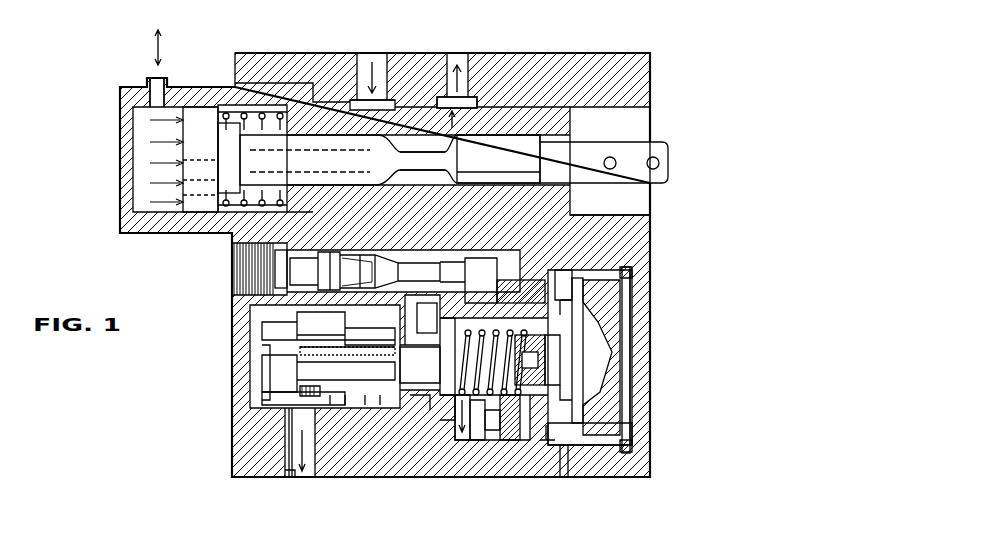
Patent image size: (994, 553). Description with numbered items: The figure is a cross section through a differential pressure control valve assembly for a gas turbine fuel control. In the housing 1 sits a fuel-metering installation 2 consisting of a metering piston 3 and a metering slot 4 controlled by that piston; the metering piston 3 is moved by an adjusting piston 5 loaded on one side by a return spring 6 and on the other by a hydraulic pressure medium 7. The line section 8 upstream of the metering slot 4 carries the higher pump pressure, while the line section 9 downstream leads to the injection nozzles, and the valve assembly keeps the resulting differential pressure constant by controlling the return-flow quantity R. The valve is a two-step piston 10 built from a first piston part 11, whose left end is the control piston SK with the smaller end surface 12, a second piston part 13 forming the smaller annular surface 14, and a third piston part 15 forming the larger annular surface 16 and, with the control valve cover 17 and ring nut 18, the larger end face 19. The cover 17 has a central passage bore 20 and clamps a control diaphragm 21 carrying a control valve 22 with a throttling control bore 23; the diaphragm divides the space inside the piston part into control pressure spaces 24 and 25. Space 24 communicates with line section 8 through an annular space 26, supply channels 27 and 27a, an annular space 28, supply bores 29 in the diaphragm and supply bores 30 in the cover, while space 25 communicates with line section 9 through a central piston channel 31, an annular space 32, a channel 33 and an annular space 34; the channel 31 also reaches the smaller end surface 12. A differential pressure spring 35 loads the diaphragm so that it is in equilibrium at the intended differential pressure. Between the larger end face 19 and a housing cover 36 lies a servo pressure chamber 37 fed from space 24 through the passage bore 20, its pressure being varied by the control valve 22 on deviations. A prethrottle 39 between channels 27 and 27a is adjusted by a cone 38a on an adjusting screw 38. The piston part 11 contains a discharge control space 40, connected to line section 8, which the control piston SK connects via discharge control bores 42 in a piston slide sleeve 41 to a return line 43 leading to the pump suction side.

The housing 1 is at (585, 62).
The fuel-metering installation 2 is at (262, 140).
The metering piston 3 is at (498, 159).
The metering slot 4 is at (450, 146).
The adjusting piston 5 is at (211, 159).
The return spring 6 is at (236, 113).
The hydraulic pressure medium 7 is at (148, 82).
The line section upstream of the metering slot 8 is at (388, 62).
The line section downstream of the metering slot 9 is at (461, 65).
The two-step piston 10 is at (386, 395).
The first piston part 11 is at (366, 395).
The smaller end surface 12 is at (282, 358).
The second piston part 13 is at (478, 440).
The smaller annular surface 14 is at (420, 410).
The third piston part 15 is at (553, 442).
The larger annular surface 16 is at (500, 414).
The control valve cover 17 is at (576, 390).
The ring nut 18 is at (576, 452).
The larger end face 19 is at (630, 270).
The passage bore 20 is at (548, 352).
The control diaphragm 21 is at (505, 412).
The control valve 22 is at (540, 380).
The control bore 23 is at (548, 368).
The control pressure space 24 is at (562, 330).
The control pressure space 25 is at (470, 405).
The annular space 26 is at (352, 100).
The supply channel 27 is at (365, 271).
The supply channel 27a is at (385, 255).
The annular space 28 is at (512, 270).
The supply bores 29 is at (545, 290).
The supply bores 30 is at (600, 422).
The central piston channel 31 is at (463, 356).
The annular space 32 is at (429, 318).
The channel 33 is at (542, 176).
The annular space 34 is at (478, 100).
The differential pressure spring 35 is at (512, 420).
The housing cover 36 is at (632, 447).
The servo pressure chamber 37 is at (585, 440).
The adjusting screw 38 is at (250, 258).
The cone 38a is at (338, 250).
The prethrottle 39 is at (365, 262).
The discharge control space 40 is at (333, 400).
The piston slide sleeve 41 is at (347, 400).
The discharge control bores 42 is at (306, 393).
The return line 43 is at (292, 474).
The regulator return-flow quantity R is at (302, 472).
The control piston SK is at (268, 378).